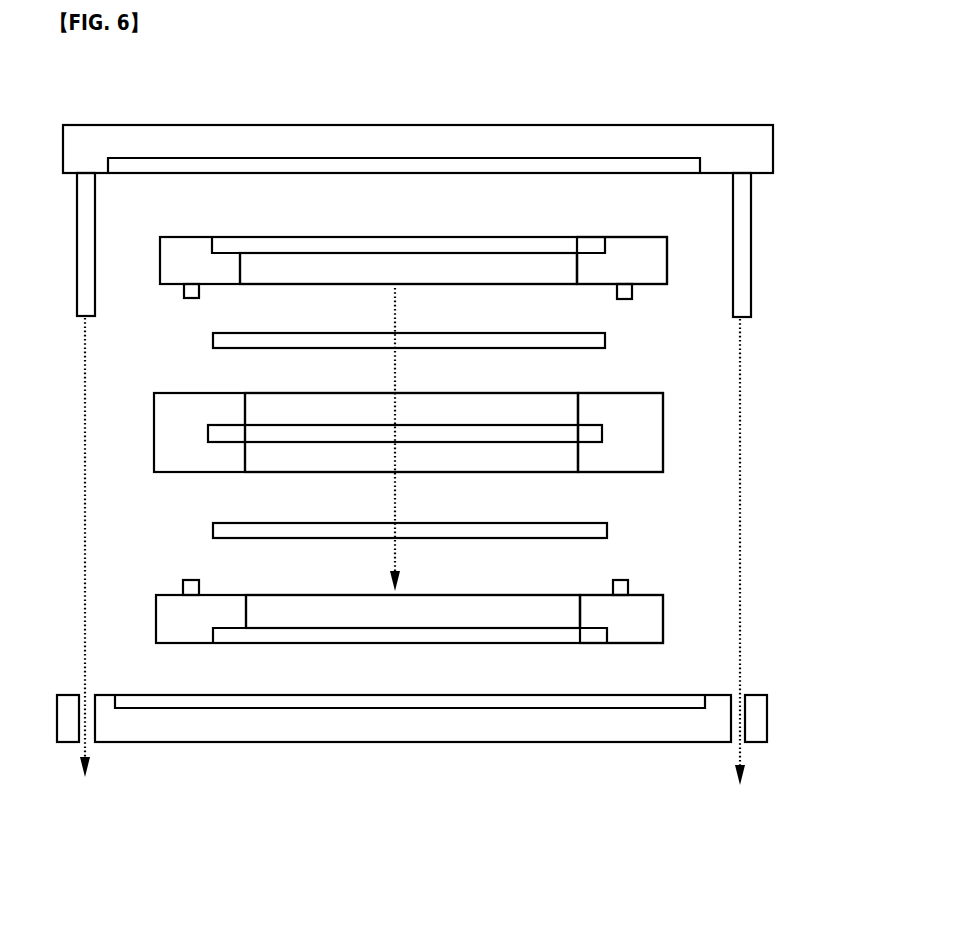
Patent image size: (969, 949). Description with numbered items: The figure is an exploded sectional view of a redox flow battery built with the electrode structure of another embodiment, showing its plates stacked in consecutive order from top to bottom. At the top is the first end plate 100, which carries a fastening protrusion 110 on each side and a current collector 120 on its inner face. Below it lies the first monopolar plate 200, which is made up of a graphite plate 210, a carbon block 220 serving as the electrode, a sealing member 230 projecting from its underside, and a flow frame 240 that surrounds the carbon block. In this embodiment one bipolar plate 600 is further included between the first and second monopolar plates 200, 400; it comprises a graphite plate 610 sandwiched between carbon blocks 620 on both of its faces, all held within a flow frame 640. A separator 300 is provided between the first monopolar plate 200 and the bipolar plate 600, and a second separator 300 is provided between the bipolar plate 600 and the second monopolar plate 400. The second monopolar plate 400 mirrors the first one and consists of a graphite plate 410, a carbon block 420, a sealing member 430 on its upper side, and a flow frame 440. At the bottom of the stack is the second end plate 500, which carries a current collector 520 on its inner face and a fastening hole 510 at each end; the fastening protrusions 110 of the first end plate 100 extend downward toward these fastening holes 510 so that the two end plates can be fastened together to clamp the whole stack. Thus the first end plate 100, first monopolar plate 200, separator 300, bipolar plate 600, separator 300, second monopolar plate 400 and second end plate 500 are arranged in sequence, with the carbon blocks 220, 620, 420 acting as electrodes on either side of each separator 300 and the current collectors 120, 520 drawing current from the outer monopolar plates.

The first end plate 100 is at (303, 143).
The fastening protrusion 110 is at (740, 273).
The current collector 120 is at (154, 167).
The first monopolar plate 200 is at (150, 262).
The graphite plate 210 is at (280, 245).
The carbon block 220 is at (487, 273).
The sealing member 230 is at (625, 297).
The flow frame 240 is at (618, 270).
The separator 300 is at (233, 342).
The second monopolar plate 400 is at (150, 617).
The graphite plate 410 is at (562, 635).
The carbon block 420 is at (517, 610).
The sealing member 430 is at (623, 585).
The flow frame 440 is at (640, 618).
The second end plate 500 is at (530, 725).
The fastening hole 510 is at (742, 735).
The current collector 520 is at (675, 700).
The bipolar plate 600 is at (150, 433).
The graphite plate 610 is at (222, 435).
The carbon block 620 is at (540, 410).
The flow frame 640 is at (643, 445).